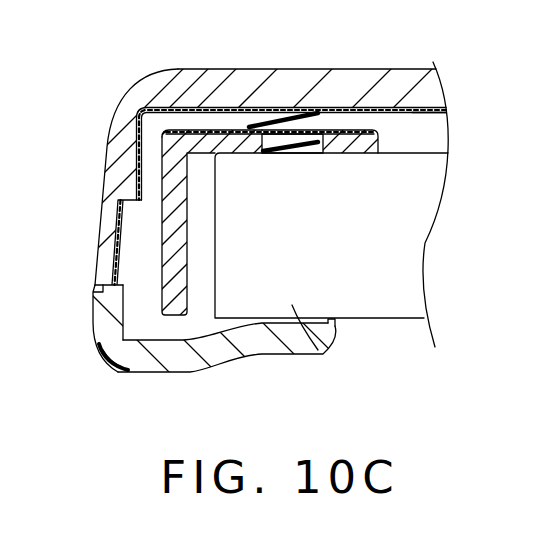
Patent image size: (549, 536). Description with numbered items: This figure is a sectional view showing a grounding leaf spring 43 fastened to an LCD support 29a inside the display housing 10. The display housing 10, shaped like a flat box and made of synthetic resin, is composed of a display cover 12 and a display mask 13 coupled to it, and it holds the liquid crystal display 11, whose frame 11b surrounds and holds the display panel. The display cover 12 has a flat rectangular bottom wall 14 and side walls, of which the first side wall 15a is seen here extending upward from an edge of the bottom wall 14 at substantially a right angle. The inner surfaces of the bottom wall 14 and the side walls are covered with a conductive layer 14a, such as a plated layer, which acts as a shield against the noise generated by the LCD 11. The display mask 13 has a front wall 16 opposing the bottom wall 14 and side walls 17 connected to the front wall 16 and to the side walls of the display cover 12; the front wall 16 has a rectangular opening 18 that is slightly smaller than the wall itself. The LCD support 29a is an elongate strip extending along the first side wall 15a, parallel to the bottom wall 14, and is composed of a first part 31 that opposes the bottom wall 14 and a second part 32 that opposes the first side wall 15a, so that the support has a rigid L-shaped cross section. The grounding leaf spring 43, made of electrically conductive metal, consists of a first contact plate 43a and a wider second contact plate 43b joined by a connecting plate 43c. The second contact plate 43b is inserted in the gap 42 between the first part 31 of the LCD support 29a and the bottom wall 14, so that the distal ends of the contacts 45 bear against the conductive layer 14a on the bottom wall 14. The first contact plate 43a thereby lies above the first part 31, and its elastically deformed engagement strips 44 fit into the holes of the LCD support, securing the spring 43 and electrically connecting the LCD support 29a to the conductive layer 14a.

The display housing 10 is at (387, 71).
The liquid crystal display 11 is at (425, 243).
The frame 11b is at (323, 350).
The display cover 12 is at (125, 82).
The display mask 13 is at (124, 368).
The bottom wall 14 is at (428, 88).
The conductive layer 14a is at (412, 115).
The first side wall 15a is at (110, 167).
The front wall 16 is at (265, 347).
The side walls 17 is at (103, 322).
The rectangular opening 18 is at (337, 330).
The LCD support 29a is at (243, 158).
The first part 31 is at (347, 108).
The second part 32 is at (174, 275).
The gap 42 is at (225, 82).
The grounding leaf spring 43 is at (390, 147).
The first contact plate 43a is at (362, 158).
The second contact plate 43b is at (172, 70).
The connecting plate 43c is at (388, 129).
The engagement strips 44 is at (309, 158).
The contacts 45 is at (278, 108).